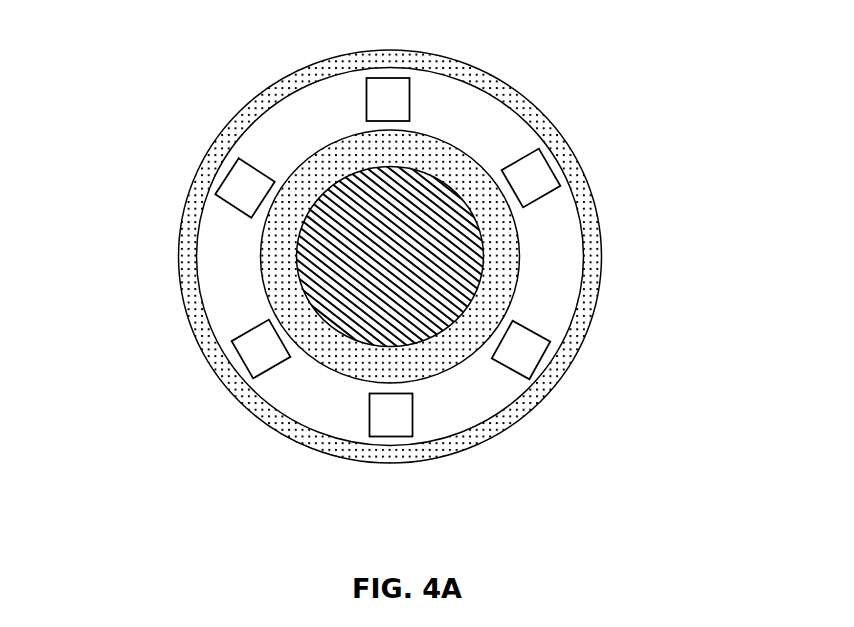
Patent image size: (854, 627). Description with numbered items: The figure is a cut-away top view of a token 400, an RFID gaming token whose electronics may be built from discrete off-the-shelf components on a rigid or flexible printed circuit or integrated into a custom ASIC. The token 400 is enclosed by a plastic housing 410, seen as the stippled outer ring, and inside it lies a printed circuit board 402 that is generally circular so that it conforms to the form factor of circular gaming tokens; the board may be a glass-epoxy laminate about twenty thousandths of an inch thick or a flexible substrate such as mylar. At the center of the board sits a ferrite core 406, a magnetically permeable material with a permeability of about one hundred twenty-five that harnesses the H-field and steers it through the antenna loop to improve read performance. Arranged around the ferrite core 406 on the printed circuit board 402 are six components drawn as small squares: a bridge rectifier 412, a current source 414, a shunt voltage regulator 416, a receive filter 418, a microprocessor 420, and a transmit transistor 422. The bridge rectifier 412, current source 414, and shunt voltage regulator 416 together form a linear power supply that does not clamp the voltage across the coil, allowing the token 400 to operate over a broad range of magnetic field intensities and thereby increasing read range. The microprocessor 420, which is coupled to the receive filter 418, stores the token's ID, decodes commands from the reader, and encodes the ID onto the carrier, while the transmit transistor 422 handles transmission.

The token 400 is at (660, 512).
The printed circuit board 402 is at (587, 287).
The ferrite core 406 is at (305, 276).
The plastic housing 410 is at (517, 230).
The bridge rectifier 412 is at (372, 428).
The current source 414 is at (240, 358).
The shunt voltage regulator 416 is at (225, 175).
The receive filter 418 is at (367, 92).
The microprocessor 420 is at (515, 157).
The transmit transistor 422 is at (538, 358).